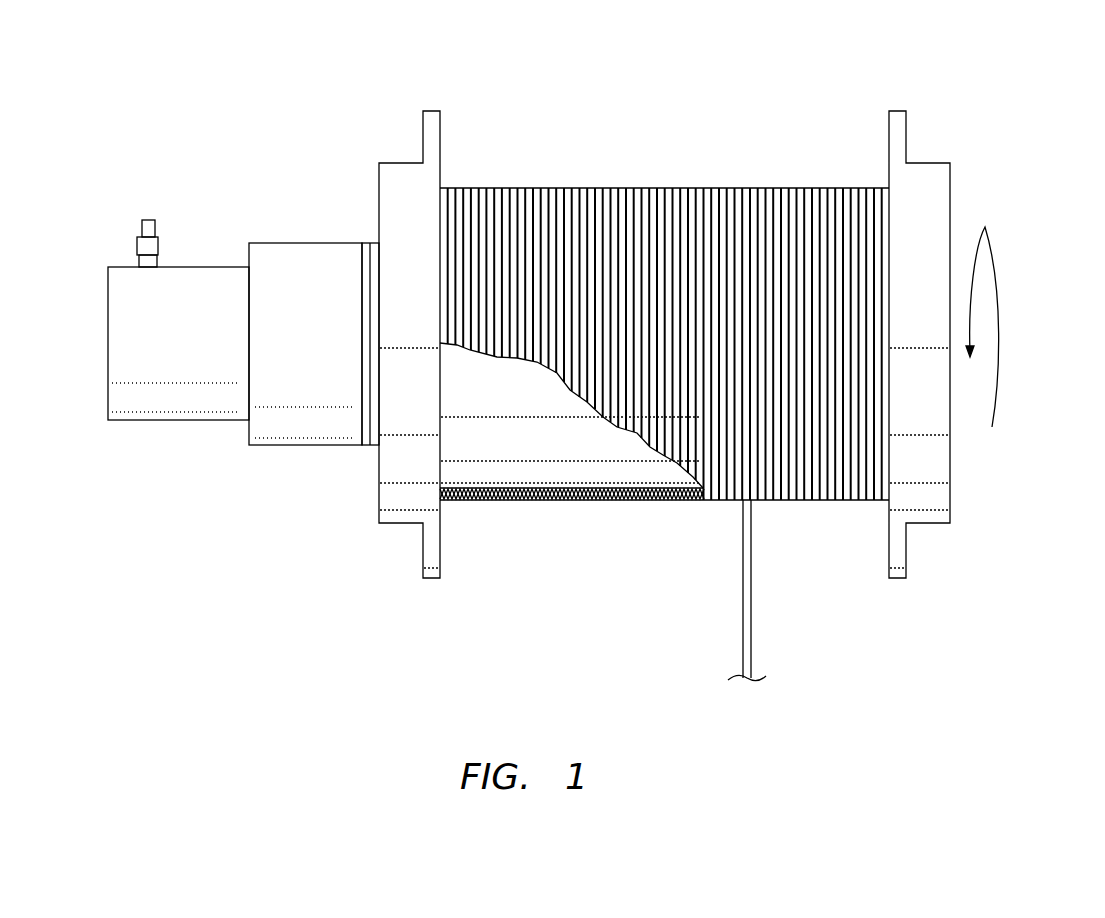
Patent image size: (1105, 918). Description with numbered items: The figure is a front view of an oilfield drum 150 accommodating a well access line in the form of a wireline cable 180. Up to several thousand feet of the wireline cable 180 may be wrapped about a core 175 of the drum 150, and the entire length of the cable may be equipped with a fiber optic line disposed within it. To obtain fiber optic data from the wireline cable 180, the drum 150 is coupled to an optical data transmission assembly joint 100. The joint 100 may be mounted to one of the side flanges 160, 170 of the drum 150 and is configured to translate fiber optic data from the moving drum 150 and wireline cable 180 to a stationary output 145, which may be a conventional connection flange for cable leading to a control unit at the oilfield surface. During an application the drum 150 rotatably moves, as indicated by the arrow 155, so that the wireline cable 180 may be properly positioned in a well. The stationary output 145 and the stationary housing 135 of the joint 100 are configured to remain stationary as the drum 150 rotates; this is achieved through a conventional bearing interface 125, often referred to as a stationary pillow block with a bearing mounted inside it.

The optical data transmission assembly joint 100 is at (173, 134).
The bearing interface 125 is at (366, 243).
The stationary housing 135 is at (200, 354).
The stationary output 145 is at (140, 240).
The oilfield drum 150 is at (698, 62).
The arrow 155 is at (1003, 330).
The side flange 160 is at (395, 487).
The side flange 170 is at (937, 474).
The core 175 is at (557, 487).
The wireline cable 180 is at (740, 593).